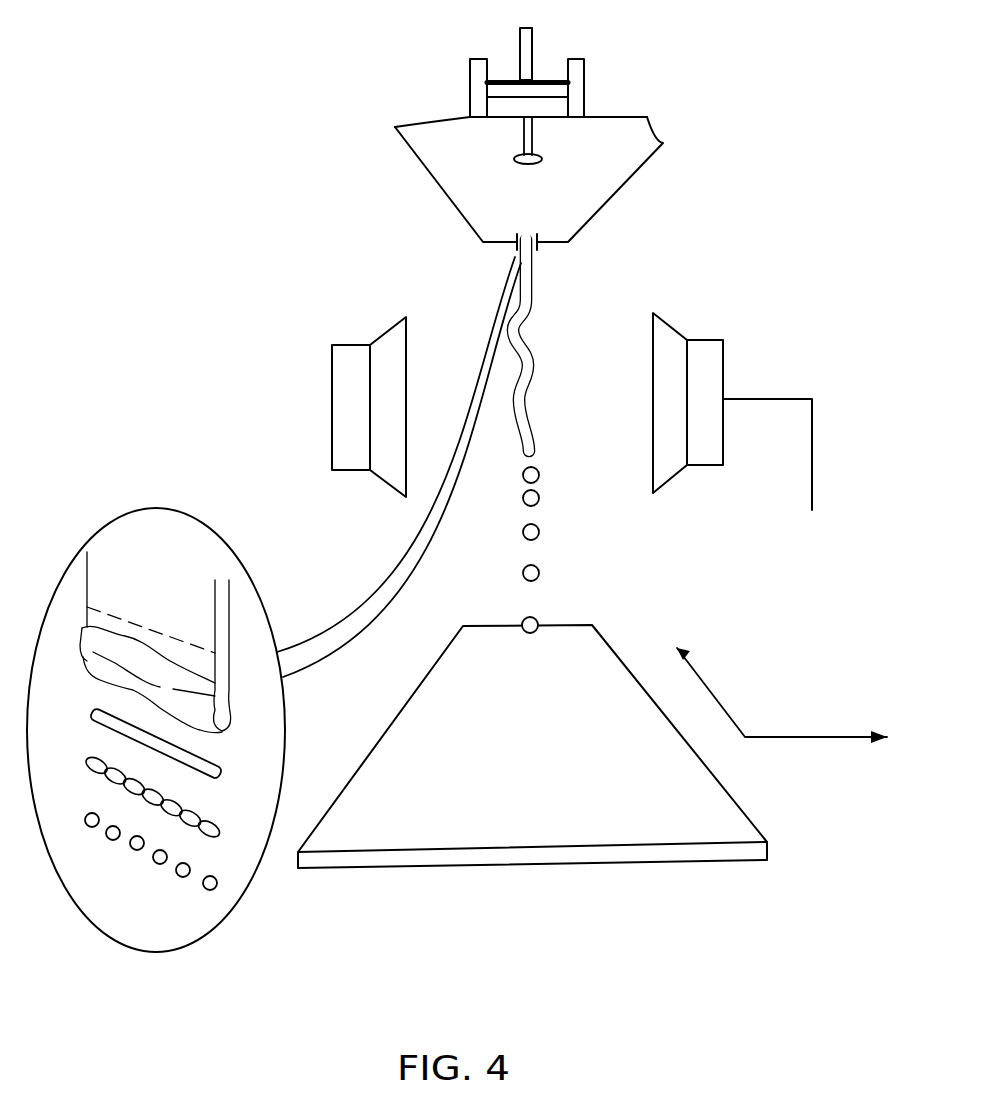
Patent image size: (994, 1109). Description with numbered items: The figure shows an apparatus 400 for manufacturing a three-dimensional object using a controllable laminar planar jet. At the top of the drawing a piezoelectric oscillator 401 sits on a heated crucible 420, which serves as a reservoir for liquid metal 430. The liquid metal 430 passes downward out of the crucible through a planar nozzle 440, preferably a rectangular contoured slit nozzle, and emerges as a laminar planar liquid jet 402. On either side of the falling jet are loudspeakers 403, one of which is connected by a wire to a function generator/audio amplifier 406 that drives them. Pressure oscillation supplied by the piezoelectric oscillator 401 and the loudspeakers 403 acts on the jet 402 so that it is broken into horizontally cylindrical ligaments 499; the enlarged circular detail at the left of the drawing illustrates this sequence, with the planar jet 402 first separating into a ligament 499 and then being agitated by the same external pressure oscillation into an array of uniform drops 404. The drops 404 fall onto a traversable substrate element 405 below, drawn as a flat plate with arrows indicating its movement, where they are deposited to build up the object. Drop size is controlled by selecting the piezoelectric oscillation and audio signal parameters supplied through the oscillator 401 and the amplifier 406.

The controllable laminar planar jet apparatus 400 is at (181, 150).
The piezoelectric oscillator 401 is at (585, 78).
The laminar planar liquid jet 402 is at (522, 325).
The loudspeakers 403 is at (332, 415).
The array of uniform drops 404 is at (212, 892).
The traversable substrate element 405 is at (650, 864).
The function generator/audio amplifier 406 is at (812, 473).
The heated crucible 420 is at (663, 143).
The liquid metal 430 is at (430, 130).
The planar nozzle 440 is at (513, 245).
The horizontally cylindrical ligaments 499 is at (223, 787).